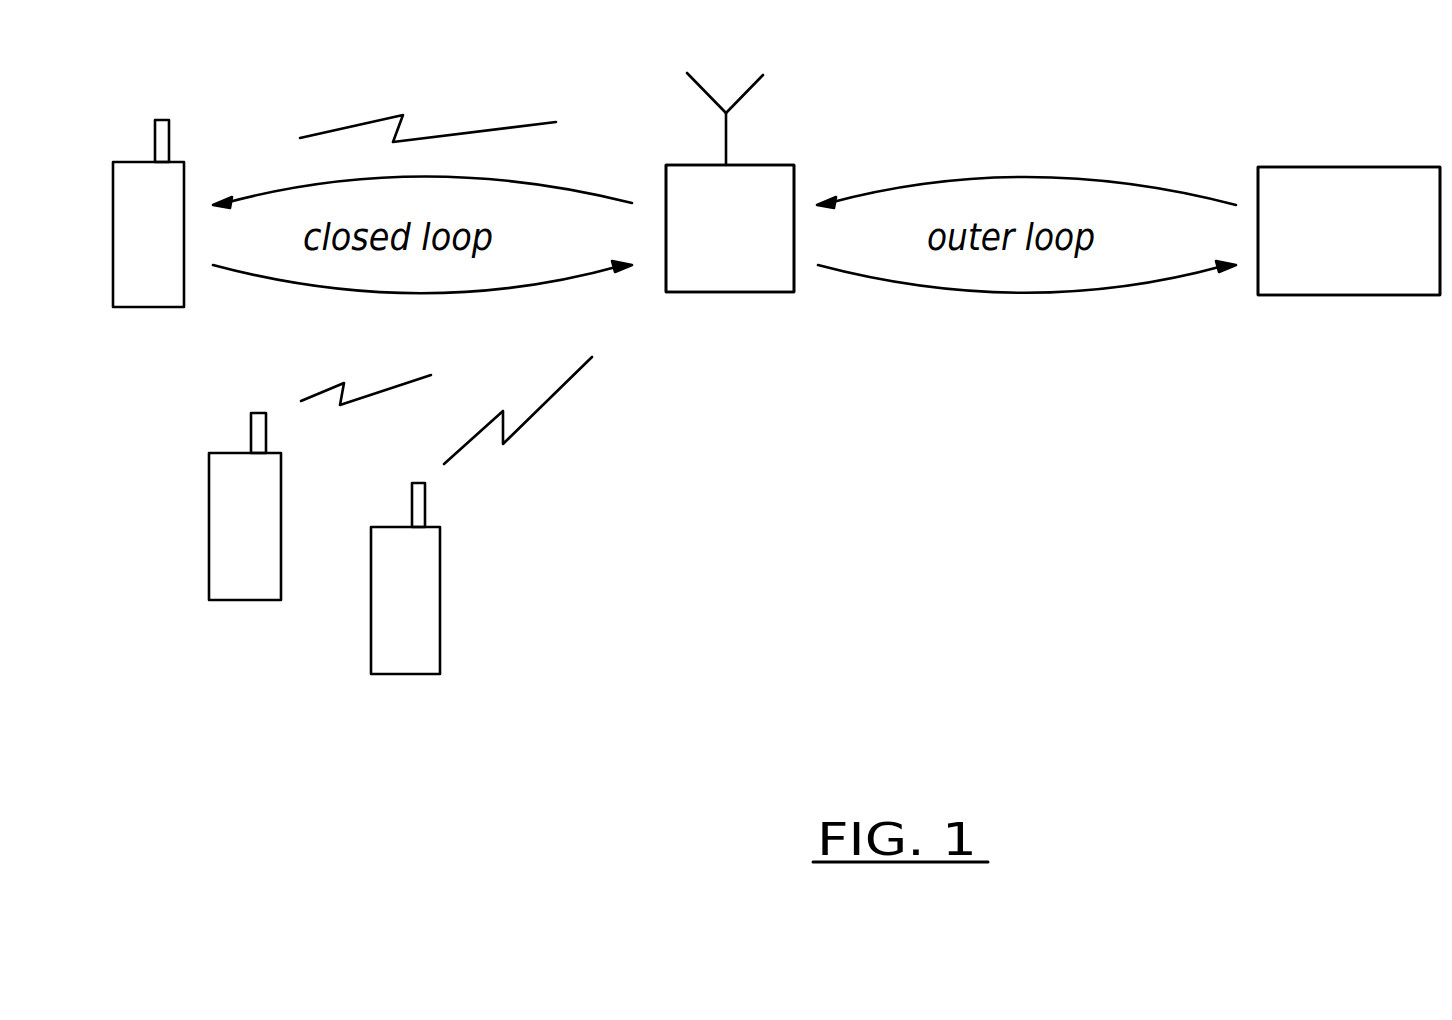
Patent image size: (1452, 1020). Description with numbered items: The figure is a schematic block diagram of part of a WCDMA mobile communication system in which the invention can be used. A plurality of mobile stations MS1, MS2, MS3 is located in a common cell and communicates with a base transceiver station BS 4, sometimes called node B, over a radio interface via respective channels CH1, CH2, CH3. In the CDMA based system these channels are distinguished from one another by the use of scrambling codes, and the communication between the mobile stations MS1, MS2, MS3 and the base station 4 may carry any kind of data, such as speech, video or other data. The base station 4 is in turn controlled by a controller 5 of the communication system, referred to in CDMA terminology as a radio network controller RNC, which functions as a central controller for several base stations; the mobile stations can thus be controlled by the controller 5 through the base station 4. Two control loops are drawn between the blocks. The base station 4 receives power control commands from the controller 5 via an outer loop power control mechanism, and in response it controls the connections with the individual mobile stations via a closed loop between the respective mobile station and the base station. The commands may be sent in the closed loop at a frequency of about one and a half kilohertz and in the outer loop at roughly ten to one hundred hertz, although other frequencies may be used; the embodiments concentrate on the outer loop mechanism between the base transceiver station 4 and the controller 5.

The base transceiver station 4 is at (730, 247).
The controller 5 is at (1349, 281).
The mobile station MS1 is at (149, 182).
The mobile station MS2 is at (246, 538).
The mobile station MS3 is at (408, 612).
The channel CH1 is at (428, 97).
The channel CH2 is at (361, 367).
The channel CH3 is at (523, 414).
The base transceiver station BS is at (730, 156).
The radio network controller RNC is at (1349, 189).